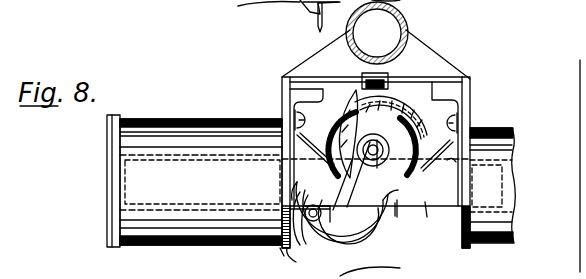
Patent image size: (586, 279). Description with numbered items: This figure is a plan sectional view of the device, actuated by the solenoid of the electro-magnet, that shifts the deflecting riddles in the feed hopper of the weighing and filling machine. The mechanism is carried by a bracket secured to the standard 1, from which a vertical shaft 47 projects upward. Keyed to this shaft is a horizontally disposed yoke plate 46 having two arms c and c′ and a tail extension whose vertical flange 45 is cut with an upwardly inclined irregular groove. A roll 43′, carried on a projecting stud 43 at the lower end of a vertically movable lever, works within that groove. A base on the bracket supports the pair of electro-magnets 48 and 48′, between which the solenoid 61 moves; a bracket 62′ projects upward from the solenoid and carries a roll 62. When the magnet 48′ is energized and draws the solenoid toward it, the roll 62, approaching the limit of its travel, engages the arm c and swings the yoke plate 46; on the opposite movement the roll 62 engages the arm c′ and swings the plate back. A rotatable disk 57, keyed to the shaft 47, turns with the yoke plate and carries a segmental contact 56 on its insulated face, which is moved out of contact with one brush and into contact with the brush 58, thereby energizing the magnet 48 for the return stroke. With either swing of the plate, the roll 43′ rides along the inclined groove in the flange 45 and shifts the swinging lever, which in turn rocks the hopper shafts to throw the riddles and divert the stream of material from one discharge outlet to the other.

The standard 1 is at (232, 4).
The projecting stud 43 is at (383, 45).
The roll 43' is at (365, 117).
The vertical flange 45 is at (282, 172).
The yoke plate 46 is at (406, 178).
The vertical shaft 47 is at (296, 168).
The electro-magnet 48 is at (174, 181).
The electro-magnet 48' is at (505, 187).
The segmental contact 56 is at (443, 153).
The rotatable disk 57 is at (396, 212).
The brush 58 is at (376, 146).
The solenoid 61 is at (427, 208).
The roll 62 is at (283, 262).
The bracket 62' is at (257, 259).
The arm of the yoke plate C is at (350, 217).
The arm of the yoke plate C' is at (340, 203).